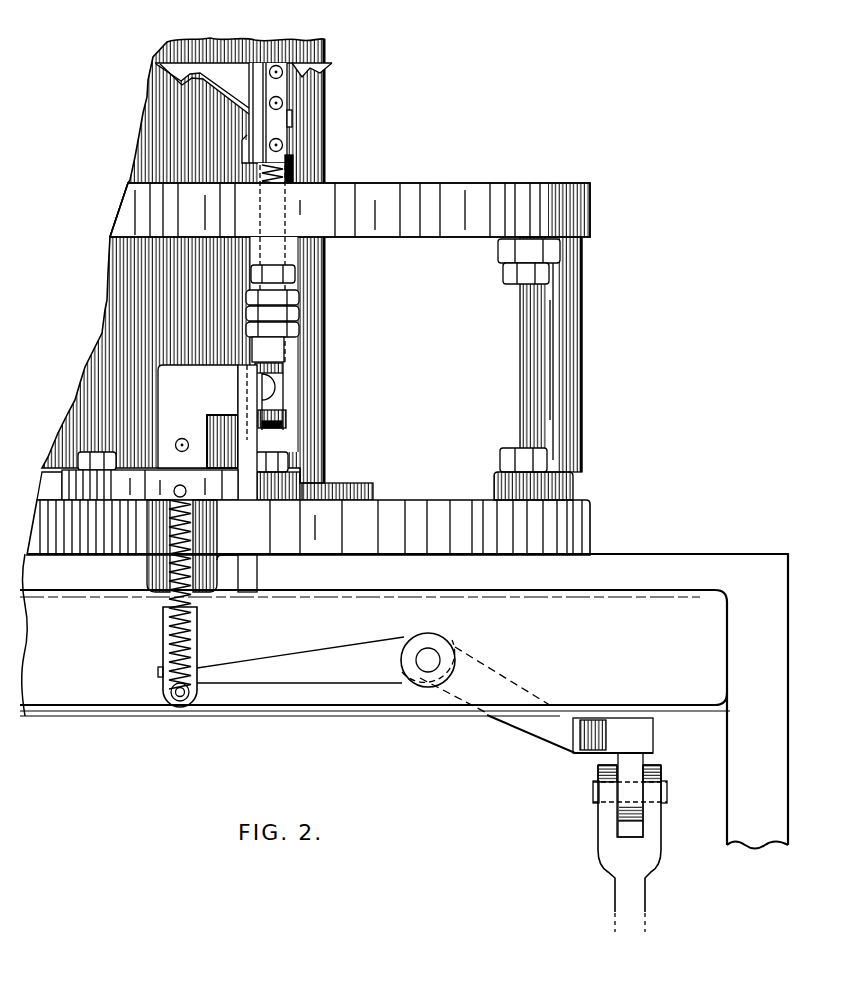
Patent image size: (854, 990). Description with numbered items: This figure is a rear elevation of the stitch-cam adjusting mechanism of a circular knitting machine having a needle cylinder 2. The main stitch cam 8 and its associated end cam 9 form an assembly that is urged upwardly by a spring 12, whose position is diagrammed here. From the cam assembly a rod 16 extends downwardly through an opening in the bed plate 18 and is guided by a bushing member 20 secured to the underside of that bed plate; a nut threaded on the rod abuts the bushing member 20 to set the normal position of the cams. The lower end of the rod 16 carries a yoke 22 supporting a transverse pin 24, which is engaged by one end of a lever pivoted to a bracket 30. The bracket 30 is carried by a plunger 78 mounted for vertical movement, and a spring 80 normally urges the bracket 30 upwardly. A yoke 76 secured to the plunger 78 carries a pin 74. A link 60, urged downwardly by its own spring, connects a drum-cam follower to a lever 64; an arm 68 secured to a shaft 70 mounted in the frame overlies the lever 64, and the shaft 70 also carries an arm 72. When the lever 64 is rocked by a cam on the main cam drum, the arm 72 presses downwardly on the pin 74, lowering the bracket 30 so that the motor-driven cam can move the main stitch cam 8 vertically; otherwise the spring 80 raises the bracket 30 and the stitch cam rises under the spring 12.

The needle cylinder 2 is at (330, 372).
The main stitch cam 8 is at (237, 72).
The end cam 9 is at (290, 118).
The spring 12 is at (283, 168).
The rod 16 is at (289, 178).
The bed plate 18 is at (445, 192).
The bushing member 20 is at (290, 243).
The yoke 22 is at (287, 386).
The transverse pin 24 is at (290, 412).
The bracket 30 is at (185, 388).
The plunger 78 is at (184, 440).
The yoke 76 is at (162, 618).
The spring 80 is at (198, 622).
The pin 74 is at (178, 703).
The arm 72 is at (254, 662).
The shaft 70 is at (432, 658).
The arm 68 is at (556, 740).
The lever 64 is at (640, 762).
The link 60 is at (638, 888).